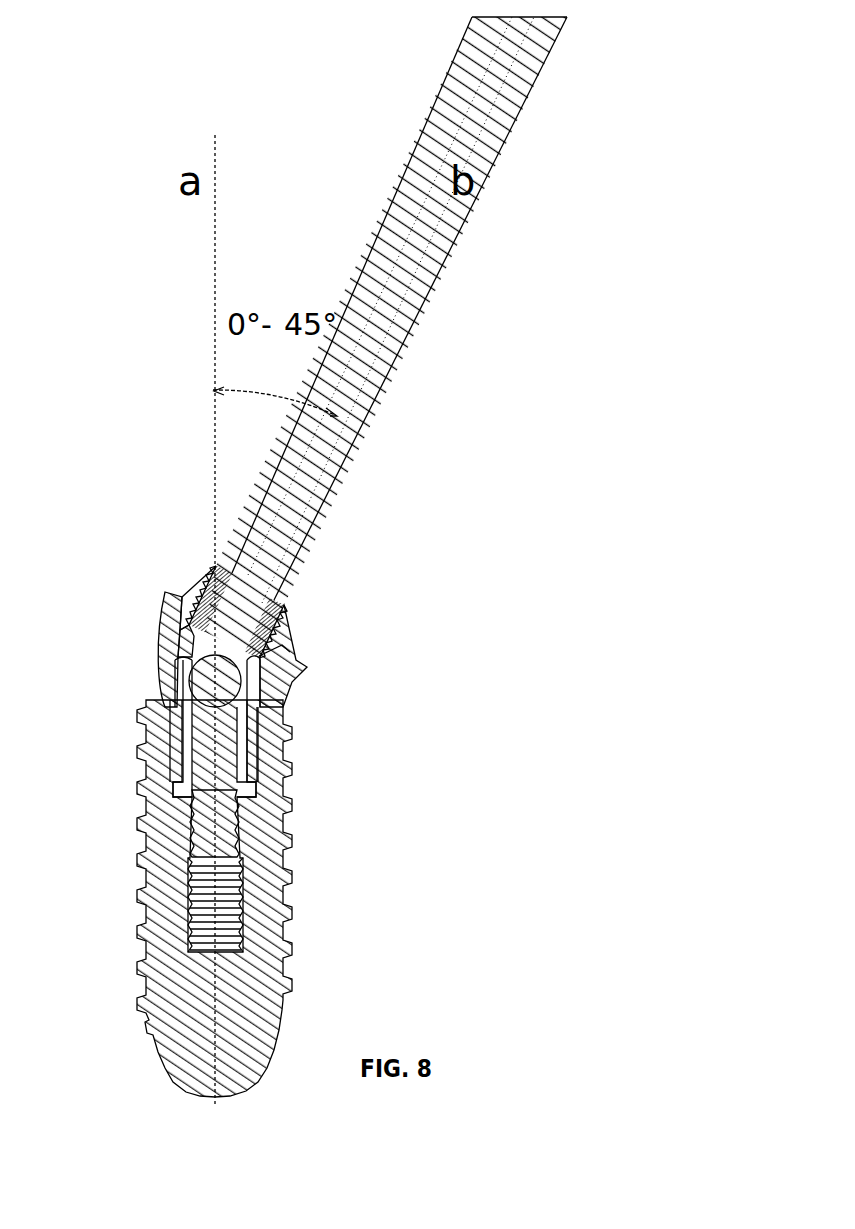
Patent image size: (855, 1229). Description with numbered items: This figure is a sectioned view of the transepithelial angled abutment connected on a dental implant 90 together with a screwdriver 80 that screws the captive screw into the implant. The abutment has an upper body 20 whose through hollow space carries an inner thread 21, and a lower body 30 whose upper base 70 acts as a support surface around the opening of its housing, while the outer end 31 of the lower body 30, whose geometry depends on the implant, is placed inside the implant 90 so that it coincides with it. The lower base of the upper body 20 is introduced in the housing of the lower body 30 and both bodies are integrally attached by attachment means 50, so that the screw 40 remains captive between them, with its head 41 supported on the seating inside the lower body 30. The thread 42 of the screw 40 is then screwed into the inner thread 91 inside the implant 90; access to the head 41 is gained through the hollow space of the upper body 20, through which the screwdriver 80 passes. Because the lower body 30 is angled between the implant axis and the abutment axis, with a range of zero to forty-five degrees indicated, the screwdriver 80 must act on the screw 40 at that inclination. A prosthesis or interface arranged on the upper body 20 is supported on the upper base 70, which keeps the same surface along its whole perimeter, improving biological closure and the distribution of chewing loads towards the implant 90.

The screwdriver 80 is at (400, 345).
The upper body 20 is at (290, 613).
The inner thread 21 is at (216, 565).
The upper base 70 is at (167, 590).
The attachment means 50 is at (282, 652).
The lower body 30 is at (300, 664).
The outer end 31 is at (165, 771).
The head 41 is at (260, 688).
The captive screw 40 is at (222, 755).
The thread 42 is at (238, 818).
The inner thread 91 is at (238, 893).
The dental implant 90 is at (265, 950).